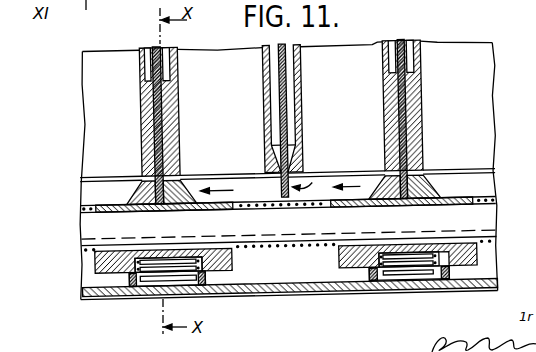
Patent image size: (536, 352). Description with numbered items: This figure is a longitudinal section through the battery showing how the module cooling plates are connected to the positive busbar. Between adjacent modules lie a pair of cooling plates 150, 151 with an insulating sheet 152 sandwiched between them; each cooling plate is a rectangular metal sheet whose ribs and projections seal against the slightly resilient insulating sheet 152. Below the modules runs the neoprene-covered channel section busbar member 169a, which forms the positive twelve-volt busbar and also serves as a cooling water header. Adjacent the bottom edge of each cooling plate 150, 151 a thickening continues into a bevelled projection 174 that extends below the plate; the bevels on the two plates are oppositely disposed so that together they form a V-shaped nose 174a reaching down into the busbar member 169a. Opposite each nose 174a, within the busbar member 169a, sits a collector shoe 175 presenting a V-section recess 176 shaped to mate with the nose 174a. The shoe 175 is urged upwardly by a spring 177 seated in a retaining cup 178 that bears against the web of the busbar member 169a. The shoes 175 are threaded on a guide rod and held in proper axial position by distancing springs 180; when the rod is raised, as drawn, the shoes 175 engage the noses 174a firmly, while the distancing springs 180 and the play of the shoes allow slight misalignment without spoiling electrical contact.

The cooling plate 150 is at (305, 93).
The cooling plate 151 is at (267, 110).
The insulating sheet 152 is at (445, 103).
The bevelled projection 174 is at (430, 176).
The V-shaped nose 174a is at (372, 179).
The collector shoe 175 is at (438, 190).
The V-section recess 176 is at (135, 191).
The spring 177 is at (423, 273).
The retaining cup 178 is at (126, 293).
The distancing springs 180 is at (311, 245).
The busbar member 169a is at (319, 284).